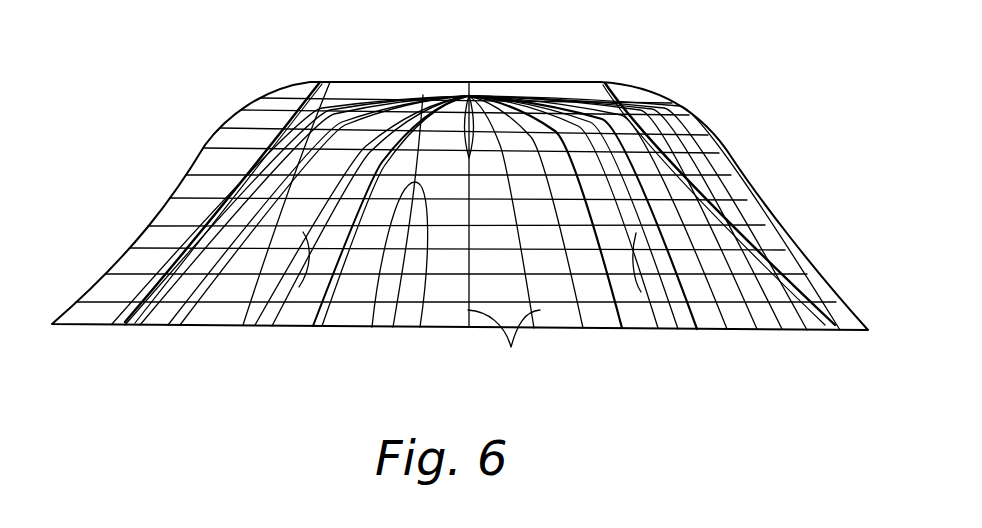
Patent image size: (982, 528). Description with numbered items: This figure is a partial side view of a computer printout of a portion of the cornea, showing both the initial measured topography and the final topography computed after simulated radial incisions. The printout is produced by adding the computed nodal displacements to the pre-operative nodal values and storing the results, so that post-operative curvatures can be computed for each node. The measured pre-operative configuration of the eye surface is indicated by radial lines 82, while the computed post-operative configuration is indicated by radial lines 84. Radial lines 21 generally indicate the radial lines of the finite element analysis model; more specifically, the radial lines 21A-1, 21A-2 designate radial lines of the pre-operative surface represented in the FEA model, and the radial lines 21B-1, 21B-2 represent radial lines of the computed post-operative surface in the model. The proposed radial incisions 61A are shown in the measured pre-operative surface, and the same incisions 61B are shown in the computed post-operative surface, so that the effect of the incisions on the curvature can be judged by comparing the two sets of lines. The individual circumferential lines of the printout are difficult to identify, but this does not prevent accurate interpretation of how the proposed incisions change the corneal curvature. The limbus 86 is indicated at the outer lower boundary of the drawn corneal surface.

The radial lines of the FEA model 21 is at (456, 232).
The radial line of the pre-operative surface 21A-1 is at (417, 330).
The radial line of the pre-operative surface 21A-2 is at (168, 323).
The radial line of the computed post-operative surface 21B-1 is at (370, 325).
The radial line of the computed post-operative surface 21B-2 is at (238, 142).
The proposed radial incisions 61A is at (253, 320).
The radial incisions in computed post-operative surface 61B is at (302, 110).
The radial lines of measured pre-operative configuration 82 is at (267, 143).
The radial lines of computed post-operative configuration 84 is at (182, 166).
The limbus 86 is at (147, 232).